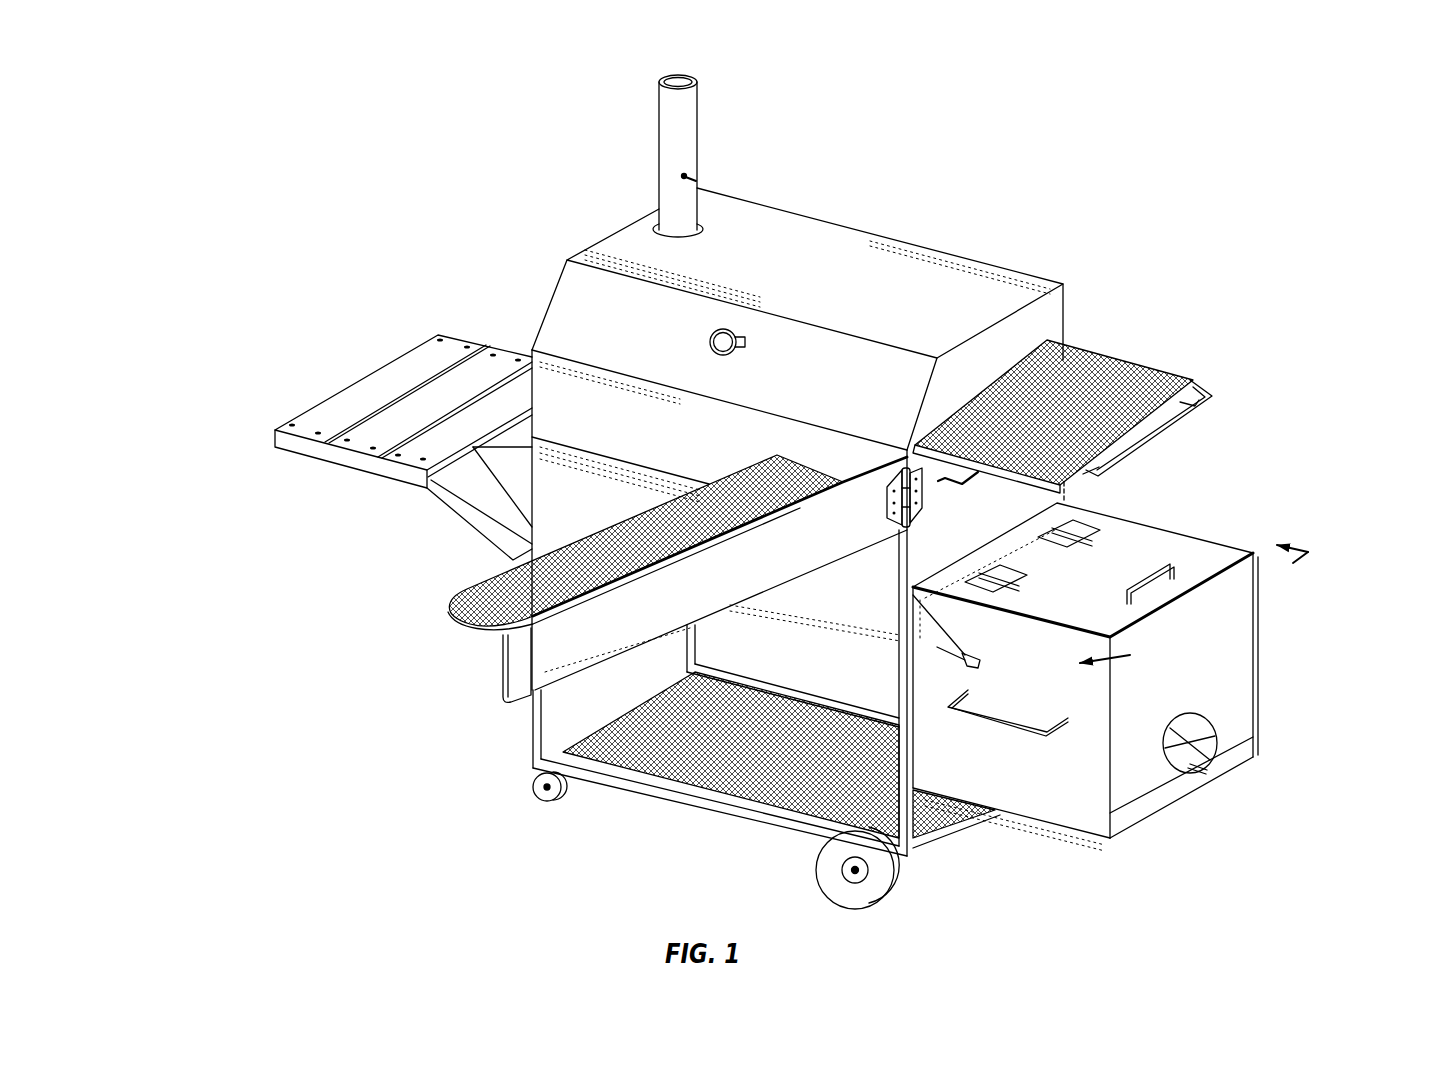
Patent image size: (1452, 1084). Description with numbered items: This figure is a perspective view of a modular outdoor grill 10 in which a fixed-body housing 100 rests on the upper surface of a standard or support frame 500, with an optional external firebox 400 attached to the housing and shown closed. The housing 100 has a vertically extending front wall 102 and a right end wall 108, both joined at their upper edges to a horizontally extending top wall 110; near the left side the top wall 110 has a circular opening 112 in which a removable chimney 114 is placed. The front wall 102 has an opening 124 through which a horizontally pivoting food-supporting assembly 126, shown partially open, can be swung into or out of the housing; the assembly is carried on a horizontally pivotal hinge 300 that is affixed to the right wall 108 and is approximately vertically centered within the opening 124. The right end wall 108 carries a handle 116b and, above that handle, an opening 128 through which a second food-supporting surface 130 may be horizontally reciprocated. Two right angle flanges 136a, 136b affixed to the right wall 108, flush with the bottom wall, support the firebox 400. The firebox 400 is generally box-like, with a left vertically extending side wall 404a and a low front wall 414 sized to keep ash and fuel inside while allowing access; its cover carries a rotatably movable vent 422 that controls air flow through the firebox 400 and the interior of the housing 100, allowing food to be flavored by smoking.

The modular outdoor grill 10 is at (317, 620).
The housing 100 is at (917, 212).
The front wall 102 is at (565, 300).
The right end wall 108 is at (1055, 312).
The top wall 110 is at (797, 227).
The circular opening 112 is at (702, 228).
The chimney 114 is at (689, 98).
The handle 116b is at (953, 479).
The opening 124 is at (583, 400).
The food-supporting assembly 126 is at (461, 651).
The opening 128 is at (1063, 365).
The second food-supporting surface 130 is at (1188, 395).
The right angle flange 136a is at (957, 667).
The right angle flange 136b is at (1073, 502).
The hinge 300 is at (885, 508).
The firebox 400 is at (1312, 542).
The left side wall 404a is at (945, 777).
The front wall 414 is at (1237, 632).
The vent 422 is at (1197, 757).
The support frame 500 is at (497, 861).